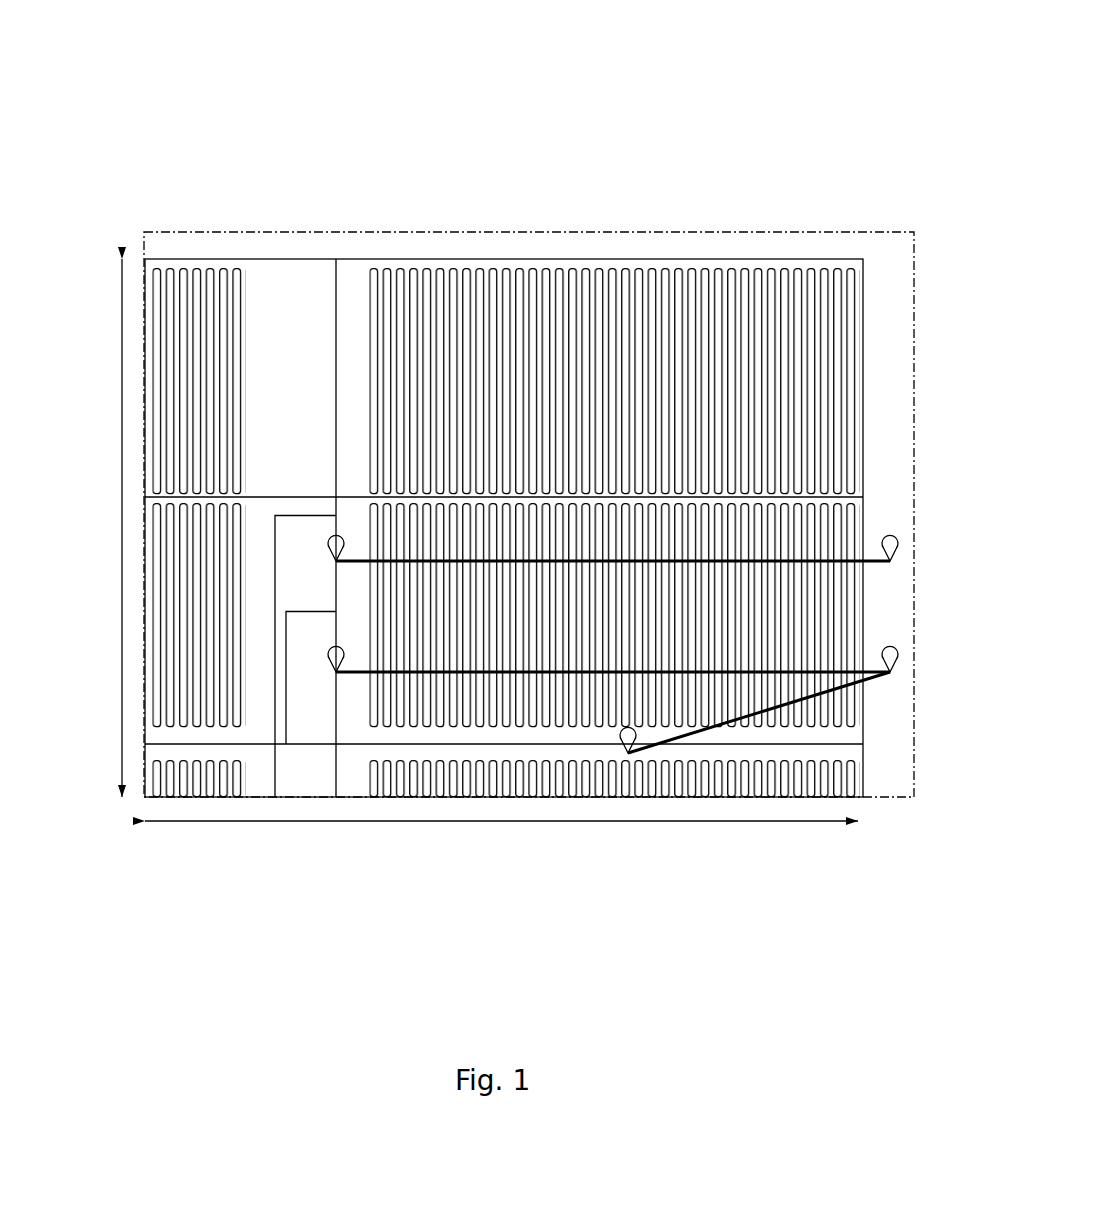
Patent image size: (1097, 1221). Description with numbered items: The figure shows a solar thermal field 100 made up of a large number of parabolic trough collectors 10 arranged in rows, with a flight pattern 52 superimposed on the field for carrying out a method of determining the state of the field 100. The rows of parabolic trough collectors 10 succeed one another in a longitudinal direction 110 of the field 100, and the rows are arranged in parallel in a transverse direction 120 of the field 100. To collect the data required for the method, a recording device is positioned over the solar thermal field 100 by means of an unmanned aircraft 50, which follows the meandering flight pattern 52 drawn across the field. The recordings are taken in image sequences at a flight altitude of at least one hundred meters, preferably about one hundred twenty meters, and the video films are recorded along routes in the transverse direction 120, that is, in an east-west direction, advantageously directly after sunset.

The solar thermal field 100 is at (862, 163).
The parabolic trough collector 10 is at (504, 266).
The unmanned aircraft 50 is at (846, 690).
The flight pattern 52 is at (856, 667).
The longitudinal direction 110 is at (121, 525).
The transverse direction 120 is at (502, 824).